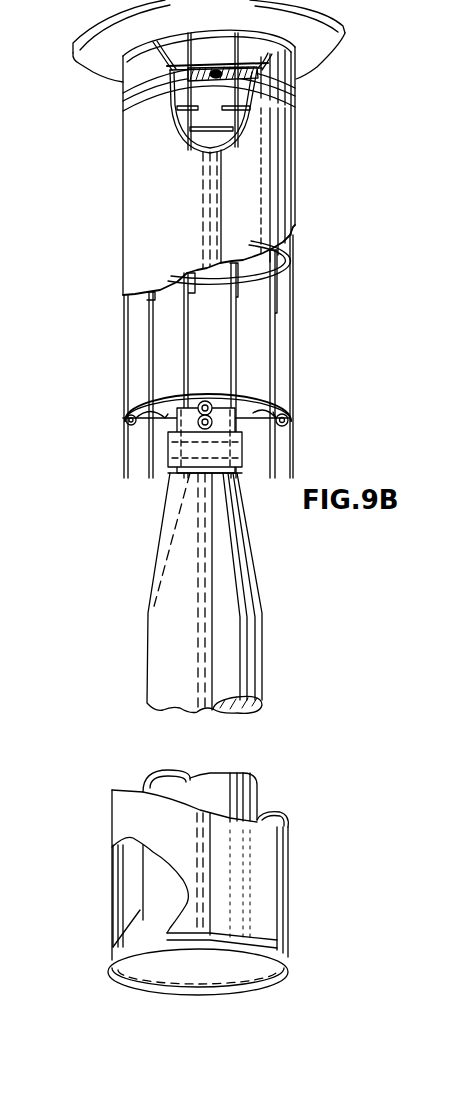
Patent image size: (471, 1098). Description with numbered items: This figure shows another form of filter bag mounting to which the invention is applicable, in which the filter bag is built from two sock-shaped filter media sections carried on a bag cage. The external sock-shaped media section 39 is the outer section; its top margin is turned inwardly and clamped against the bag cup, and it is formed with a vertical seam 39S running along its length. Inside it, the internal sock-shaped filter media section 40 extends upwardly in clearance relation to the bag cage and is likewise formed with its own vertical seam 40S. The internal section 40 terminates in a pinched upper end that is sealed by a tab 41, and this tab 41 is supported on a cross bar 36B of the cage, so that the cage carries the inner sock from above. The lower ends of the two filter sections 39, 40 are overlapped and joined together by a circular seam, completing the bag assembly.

The external sock-shaped media section 39 is at (282, 213).
The vertical seam 39S is at (207, 877).
The cross bar 36B is at (177, 410).
The tab 41 is at (173, 427).
The internal sock-shaped filter media section 40 is at (243, 670).
The vertical seam 40S is at (210, 633).